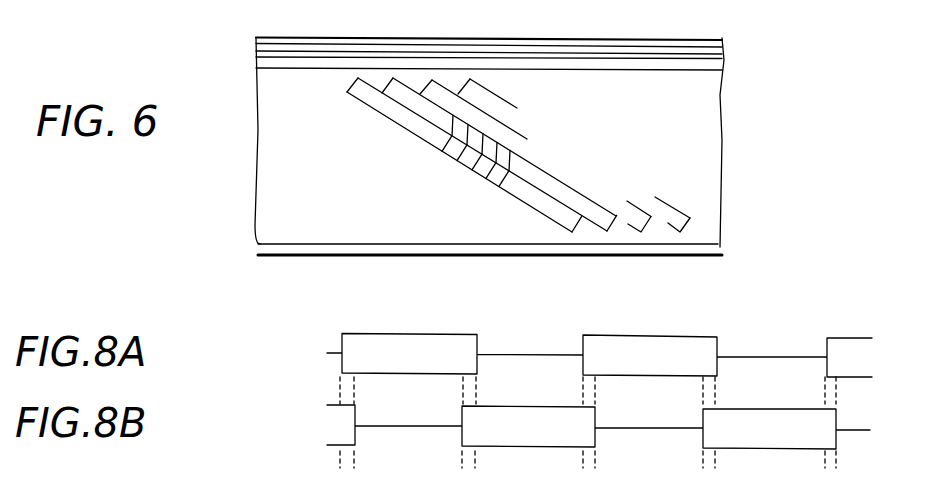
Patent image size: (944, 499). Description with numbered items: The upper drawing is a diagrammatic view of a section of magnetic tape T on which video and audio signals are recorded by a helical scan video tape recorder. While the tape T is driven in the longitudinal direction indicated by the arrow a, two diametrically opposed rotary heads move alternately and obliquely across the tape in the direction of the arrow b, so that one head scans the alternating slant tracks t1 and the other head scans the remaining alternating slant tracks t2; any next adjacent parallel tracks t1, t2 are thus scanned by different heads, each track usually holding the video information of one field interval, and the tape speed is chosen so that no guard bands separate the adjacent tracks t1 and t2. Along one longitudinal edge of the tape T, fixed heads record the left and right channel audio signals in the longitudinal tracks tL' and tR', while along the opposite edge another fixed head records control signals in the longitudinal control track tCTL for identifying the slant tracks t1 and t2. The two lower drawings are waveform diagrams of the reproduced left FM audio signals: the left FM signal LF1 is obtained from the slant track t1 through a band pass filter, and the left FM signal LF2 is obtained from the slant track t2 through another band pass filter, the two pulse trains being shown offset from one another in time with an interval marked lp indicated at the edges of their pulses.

In FIG. 6, the longitudinal track tL' is at (513, 47).
In FIG. 6, the longitudinal track tR' is at (516, 70).
In FIG. 6, the magnetic tape T is at (710, 154).
In FIG. 6, the control track tCTL is at (718, 248).
In FIG. 6, the slant track t1 is at (402, 88).
In FIG. 6, the slant track t2 is at (450, 98).
In FIG. 6, the tape travel direction a is at (313, 18).
In FIG. 6, the head scanning direction b is at (421, 153).
In FIG. 8A, the left FM signal LF1 is at (342, 343).
In FIG. 8B, the left FM signal LF2 is at (462, 410).
In FIG. 8A, the pulse overlap length lp is at (315, 321).